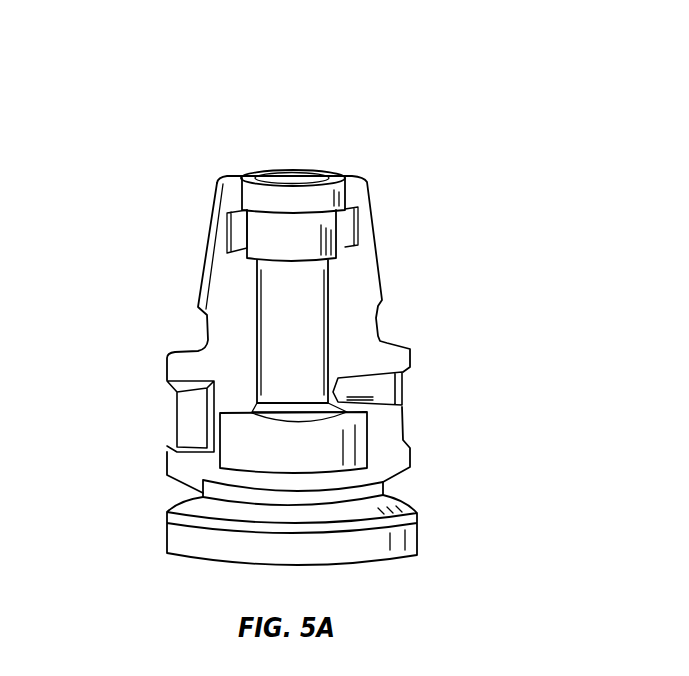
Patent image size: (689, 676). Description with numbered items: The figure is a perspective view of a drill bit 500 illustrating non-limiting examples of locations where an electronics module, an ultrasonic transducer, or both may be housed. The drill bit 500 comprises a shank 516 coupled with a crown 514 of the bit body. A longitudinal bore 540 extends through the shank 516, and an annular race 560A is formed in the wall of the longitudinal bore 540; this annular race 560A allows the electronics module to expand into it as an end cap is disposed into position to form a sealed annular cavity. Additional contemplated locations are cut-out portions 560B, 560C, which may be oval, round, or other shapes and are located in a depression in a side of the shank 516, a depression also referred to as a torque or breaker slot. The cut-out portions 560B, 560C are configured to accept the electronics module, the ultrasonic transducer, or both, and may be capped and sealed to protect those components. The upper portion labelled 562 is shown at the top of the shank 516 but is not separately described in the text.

The drill bit 500 is at (470, 114).
The crown 514 is at (408, 537).
The shank 516 is at (377, 220).
The longitudinal bore 540 is at (235, 190).
The upper cylinder 562 is at (315, 193).
The annular race 560A is at (238, 230).
The cut-out portion 560B is at (187, 422).
The cut-out portion 560C is at (380, 385).